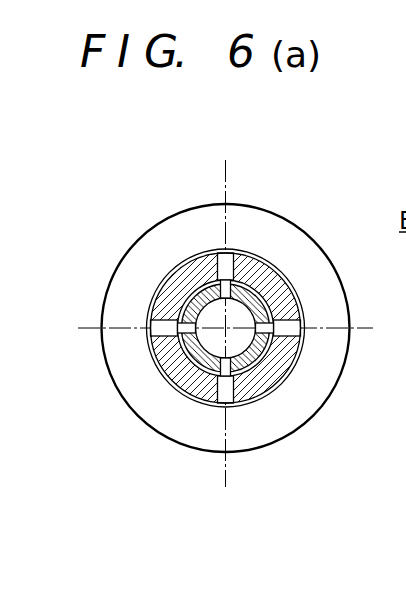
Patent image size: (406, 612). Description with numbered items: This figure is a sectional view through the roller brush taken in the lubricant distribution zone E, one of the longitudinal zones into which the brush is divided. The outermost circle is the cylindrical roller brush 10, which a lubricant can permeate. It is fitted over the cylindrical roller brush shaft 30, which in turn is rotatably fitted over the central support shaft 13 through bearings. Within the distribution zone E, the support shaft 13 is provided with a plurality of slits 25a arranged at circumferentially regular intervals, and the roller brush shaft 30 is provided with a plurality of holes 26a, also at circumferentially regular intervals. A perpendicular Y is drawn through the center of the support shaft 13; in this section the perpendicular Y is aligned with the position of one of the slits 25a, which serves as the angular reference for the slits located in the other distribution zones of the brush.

The roller brush 10 is at (300, 232).
The support shaft 13 is at (276, 388).
The roller brush shaft 30 is at (288, 298).
The slits 25a is at (250, 258).
The holes 26a is at (167, 320).
The perpendicular Y is at (226, 160).
The lubricant distribution zone E is at (117, 263).